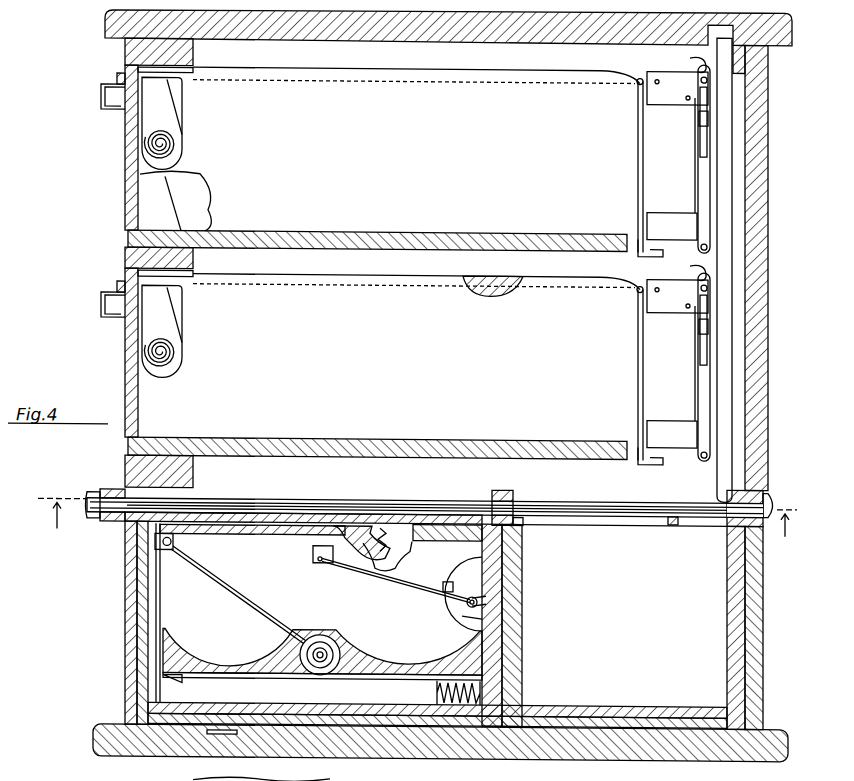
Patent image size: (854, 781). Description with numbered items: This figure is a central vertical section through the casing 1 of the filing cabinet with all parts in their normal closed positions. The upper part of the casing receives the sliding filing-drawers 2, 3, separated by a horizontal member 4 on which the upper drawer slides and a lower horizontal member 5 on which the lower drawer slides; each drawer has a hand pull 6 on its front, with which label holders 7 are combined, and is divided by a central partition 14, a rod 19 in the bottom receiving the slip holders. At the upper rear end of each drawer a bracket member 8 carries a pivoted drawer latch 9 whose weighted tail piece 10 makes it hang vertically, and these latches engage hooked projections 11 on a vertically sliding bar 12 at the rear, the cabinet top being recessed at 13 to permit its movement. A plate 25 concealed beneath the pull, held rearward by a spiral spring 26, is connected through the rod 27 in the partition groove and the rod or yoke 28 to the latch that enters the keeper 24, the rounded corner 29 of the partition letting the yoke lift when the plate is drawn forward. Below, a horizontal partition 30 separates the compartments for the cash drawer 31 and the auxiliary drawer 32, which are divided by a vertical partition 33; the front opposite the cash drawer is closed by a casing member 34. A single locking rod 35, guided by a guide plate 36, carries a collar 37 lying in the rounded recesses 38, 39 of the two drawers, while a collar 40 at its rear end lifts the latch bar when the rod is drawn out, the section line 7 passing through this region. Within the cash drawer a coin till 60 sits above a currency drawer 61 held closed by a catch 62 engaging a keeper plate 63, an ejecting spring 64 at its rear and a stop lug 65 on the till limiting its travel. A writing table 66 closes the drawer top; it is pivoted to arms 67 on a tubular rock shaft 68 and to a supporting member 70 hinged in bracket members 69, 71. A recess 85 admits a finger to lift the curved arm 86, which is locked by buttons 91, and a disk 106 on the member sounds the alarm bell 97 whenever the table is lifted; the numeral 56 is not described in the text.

The casing 1 is at (752, 395).
The filing-drawer 2 is at (125, 163).
The filing-drawer 3 is at (125, 355).
The horizontal member 4 is at (125, 258).
The horizontal member 5 is at (125, 470).
The hand pull 6 is at (100, 95).
The label holder 7 is at (413, 527).
The bracket member 8 is at (655, 70).
The drawer latch 9 is at (697, 77).
The weighted tail piece 10 is at (700, 128).
The hooked projection 11 is at (692, 60).
The vertically sliding bar 12 is at (745, 275).
The recess 13 is at (755, 8).
The central partition 14 is at (416, 178).
The rod 19 is at (172, 218).
The keeper 24 is at (128, 240).
The plate 25 is at (125, 52).
The spiral spring 26 is at (172, 112).
The rod 27 is at (495, 282).
The rod 28 is at (190, 68).
The rounded corner 29 is at (634, 82).
The partition 30 is at (594, 512).
The cash drawer 31 is at (146, 592).
The auxiliary drawer 32 is at (740, 620).
The vertical partition 33 is at (522, 568).
The casing member 34 is at (125, 620).
The rod 35 is at (640, 517).
The guide plate 36 is at (673, 520).
The collar 37 is at (505, 488).
The rounded recess 38 is at (485, 525).
The rounded recess 39 is at (523, 518).
The collar 40 is at (735, 522).
The base groove 56 is at (306, 744).
The till 60 is at (360, 646).
The drawer 61 is at (197, 712).
The catch 62 is at (168, 594).
The keeper plate 63 is at (160, 694).
The ejecting spring 64 is at (482, 691).
The stop lug 65 is at (215, 676).
The writing table 66 is at (262, 534).
The arm 67 is at (218, 576).
The tubular rock shaft 68 is at (325, 634).
The bracket member 69 is at (313, 553).
The supporting member 70 is at (408, 582).
The bracket member 71 is at (488, 597).
The recess 85 is at (356, 523).
The curved arm 86 is at (368, 550).
The button 91 is at (386, 525).
The alarm bell 97 is at (462, 600).
The disk 106 is at (470, 615).